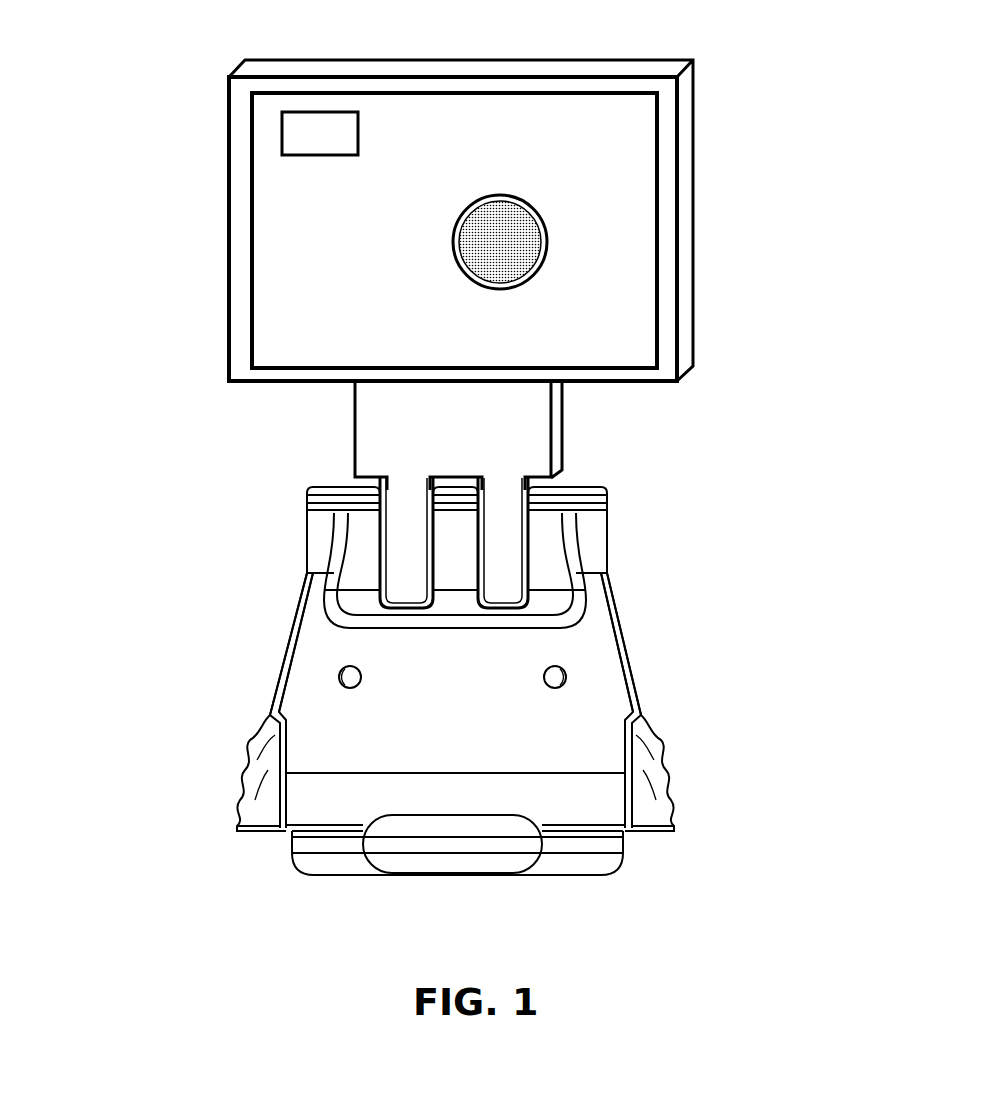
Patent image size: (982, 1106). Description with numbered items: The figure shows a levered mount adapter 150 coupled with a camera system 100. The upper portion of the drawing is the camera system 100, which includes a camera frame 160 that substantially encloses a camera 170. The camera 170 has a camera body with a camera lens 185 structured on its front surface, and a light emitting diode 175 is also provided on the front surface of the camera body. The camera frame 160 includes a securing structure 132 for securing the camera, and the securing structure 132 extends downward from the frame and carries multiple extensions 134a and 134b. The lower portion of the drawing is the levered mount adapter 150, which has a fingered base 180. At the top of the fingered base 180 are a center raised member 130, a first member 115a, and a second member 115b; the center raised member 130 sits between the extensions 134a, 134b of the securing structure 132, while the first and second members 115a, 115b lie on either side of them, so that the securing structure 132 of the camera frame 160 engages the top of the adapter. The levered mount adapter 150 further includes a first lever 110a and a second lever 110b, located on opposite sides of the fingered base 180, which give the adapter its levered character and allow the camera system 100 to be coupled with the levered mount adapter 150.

The camera system 100 is at (129, 41).
The levered mount adapter 150 is at (129, 488).
The camera frame 160 is at (692, 150).
The camera 170 is at (520, 116).
The light emitting diode 175 is at (312, 115).
The camera lens 185 is at (530, 258).
The securing structure 132 is at (533, 431).
The center raised member 130 is at (462, 577).
The extension 134a is at (405, 545).
The extension 134b is at (505, 525).
The first member 115a is at (325, 540).
The second member 115b is at (596, 525).
The first lever 110a is at (262, 765).
The second lever 110b is at (648, 765).
The fingered base 180 is at (440, 800).